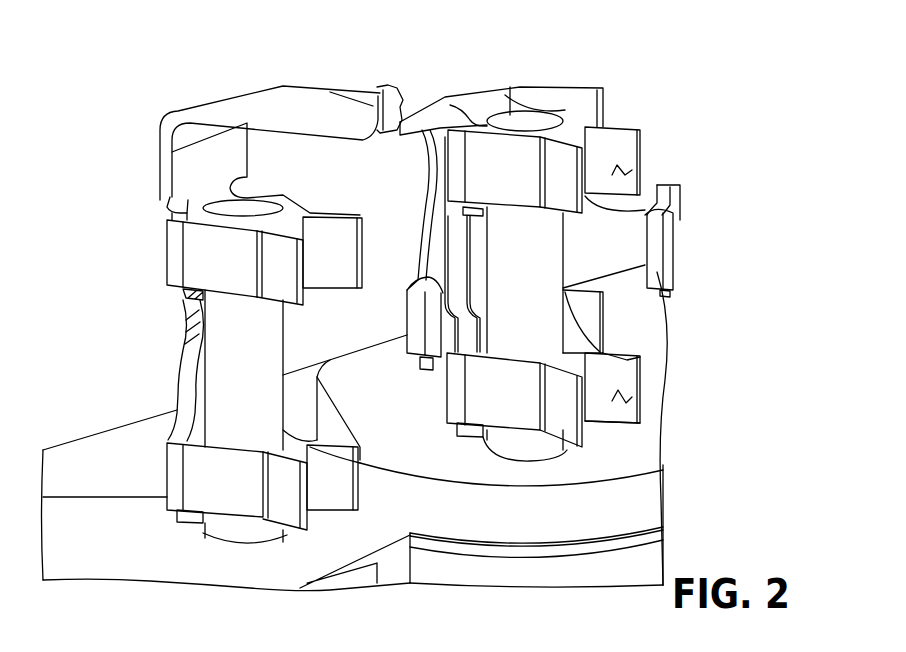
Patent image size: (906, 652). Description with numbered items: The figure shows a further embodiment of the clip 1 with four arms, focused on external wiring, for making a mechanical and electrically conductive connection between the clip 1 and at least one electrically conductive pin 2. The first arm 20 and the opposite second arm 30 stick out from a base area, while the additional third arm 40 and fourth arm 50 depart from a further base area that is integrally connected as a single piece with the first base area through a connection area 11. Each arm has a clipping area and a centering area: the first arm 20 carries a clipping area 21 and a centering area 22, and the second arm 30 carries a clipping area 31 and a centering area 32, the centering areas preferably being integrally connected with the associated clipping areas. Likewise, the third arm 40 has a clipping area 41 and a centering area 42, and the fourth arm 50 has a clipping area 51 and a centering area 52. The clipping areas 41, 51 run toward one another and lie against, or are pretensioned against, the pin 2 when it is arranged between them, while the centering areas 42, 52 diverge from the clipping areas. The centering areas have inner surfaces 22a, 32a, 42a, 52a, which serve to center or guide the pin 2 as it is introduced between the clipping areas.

The clip 1 is at (162, 245).
The electrically conductive pin 2 is at (196, 314).
The connection area 11 is at (470, 248).
The first arm 20 is at (654, 134).
The clipping area 21 is at (560, 130).
The centering area 22 is at (617, 153).
The inner surface 22a is at (615, 173).
The second arm 30 is at (476, 203).
The clipping area 31 is at (477, 157).
The centering area 32 is at (668, 191).
The inner surface 32a is at (672, 221).
The third arm 40 is at (667, 371).
The clipping area 41 is at (573, 325).
The centering area 42 is at (643, 363).
The inner surface 42a is at (615, 400).
The fourth arm 50 is at (586, 395).
The clipping area 51 is at (500, 387).
The centering area 52 is at (560, 453).
The inner surface 52a is at (590, 406).